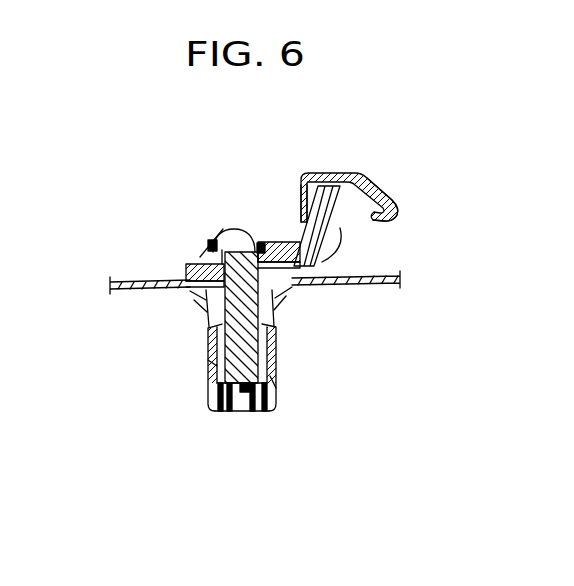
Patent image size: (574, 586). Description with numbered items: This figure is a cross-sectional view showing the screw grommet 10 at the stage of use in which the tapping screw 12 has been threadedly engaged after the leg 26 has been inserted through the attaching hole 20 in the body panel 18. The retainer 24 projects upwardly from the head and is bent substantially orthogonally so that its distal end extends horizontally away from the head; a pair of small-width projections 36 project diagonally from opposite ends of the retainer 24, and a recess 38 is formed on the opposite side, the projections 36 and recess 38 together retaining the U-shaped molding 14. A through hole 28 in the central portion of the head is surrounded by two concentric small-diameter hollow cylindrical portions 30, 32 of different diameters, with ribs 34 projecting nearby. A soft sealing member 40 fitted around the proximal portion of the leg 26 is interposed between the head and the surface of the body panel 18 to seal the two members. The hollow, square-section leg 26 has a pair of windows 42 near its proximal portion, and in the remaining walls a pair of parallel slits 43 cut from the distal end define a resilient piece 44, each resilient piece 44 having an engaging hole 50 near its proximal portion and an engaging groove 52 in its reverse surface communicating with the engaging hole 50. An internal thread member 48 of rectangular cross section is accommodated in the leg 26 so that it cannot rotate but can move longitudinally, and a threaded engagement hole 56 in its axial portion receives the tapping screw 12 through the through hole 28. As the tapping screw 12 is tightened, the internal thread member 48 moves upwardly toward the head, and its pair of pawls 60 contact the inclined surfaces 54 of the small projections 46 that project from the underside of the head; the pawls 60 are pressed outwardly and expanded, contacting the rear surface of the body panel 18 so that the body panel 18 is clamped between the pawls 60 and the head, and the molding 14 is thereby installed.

The screw grommet 10 is at (374, 394).
The tapping screw 12 is at (242, 232).
The molding 14 is at (333, 173).
The body panel 18 is at (122, 282).
The attaching hole 20 is at (201, 302).
The retainer 24 is at (345, 222).
The leg 26 is at (276, 383).
The through hole 28 is at (228, 233).
The small-diameter hollow cylindrical portion 30 is at (215, 242).
The small-diameter hollow cylindrical portion 32 is at (210, 247).
The rib 34 is at (324, 257).
The projection 36 is at (377, 197).
The recess 38 is at (301, 219).
The sealing member 40 is at (188, 272).
The window 42 is at (206, 312).
The slit 43 is at (217, 414).
The resilient piece 44 is at (253, 415).
The small projection 46 is at (188, 277).
The internal thread member 48 is at (281, 362).
The engaging hole 50 is at (268, 413).
The engaging groove 52 is at (238, 414).
The inclined surface 54 is at (204, 307).
The threaded engagement hole 56 is at (208, 363).
The pawl 60 is at (198, 295).